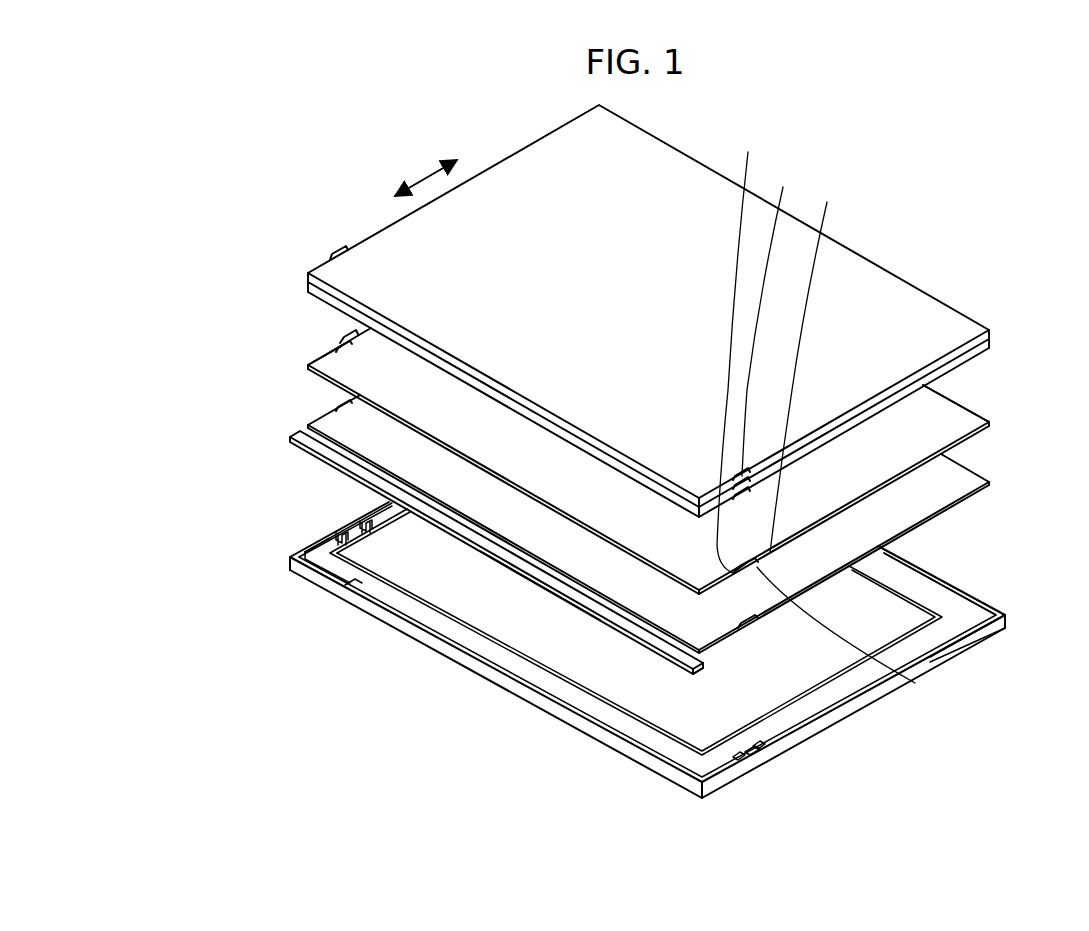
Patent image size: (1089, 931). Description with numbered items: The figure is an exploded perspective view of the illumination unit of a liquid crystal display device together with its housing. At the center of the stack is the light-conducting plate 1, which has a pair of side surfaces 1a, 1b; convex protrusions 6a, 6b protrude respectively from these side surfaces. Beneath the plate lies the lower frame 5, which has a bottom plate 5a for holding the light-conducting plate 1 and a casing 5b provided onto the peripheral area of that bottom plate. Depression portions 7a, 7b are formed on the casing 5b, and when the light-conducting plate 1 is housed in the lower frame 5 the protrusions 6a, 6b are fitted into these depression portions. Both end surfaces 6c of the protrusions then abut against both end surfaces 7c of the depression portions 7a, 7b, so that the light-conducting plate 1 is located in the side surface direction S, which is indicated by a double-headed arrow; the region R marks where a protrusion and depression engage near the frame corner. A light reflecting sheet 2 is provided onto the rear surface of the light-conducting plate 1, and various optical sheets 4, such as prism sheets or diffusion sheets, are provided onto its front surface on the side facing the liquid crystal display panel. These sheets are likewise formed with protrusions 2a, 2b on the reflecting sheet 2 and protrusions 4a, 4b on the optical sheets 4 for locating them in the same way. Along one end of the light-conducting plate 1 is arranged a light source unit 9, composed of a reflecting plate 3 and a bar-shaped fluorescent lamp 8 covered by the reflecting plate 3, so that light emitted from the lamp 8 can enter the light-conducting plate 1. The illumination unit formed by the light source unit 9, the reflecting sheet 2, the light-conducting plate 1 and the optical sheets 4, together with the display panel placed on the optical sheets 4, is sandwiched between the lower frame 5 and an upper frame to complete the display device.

The light-conducting plate 1 is at (960, 410).
The side surface 1a is at (318, 353).
The side surface 1b is at (950, 493).
The light reflecting sheet 2 is at (965, 472).
The protrusion 2a is at (343, 399).
The protrusion 2b is at (753, 630).
The reflecting plate 3 is at (615, 625).
The optical sheets 4 is at (1000, 337).
The protrusion 4a is at (338, 254).
The protrusion 4b is at (783, 187).
The lower frame 5 is at (1010, 598).
The bottom plate 5a is at (915, 586).
The casing 5b is at (970, 632).
The protrusion 6a is at (347, 332).
The protrusion 6b is at (915, 683).
The end surfaces 6c is at (748, 152).
The depression portion 7a is at (352, 578).
The depression portion 7b is at (762, 748).
The end surfaces 7c is at (365, 520).
The fluorescent lamp 8 is at (703, 676).
The light source unit 9 is at (533, 590).
The region R is at (300, 548).
The side surface direction S is at (428, 185).